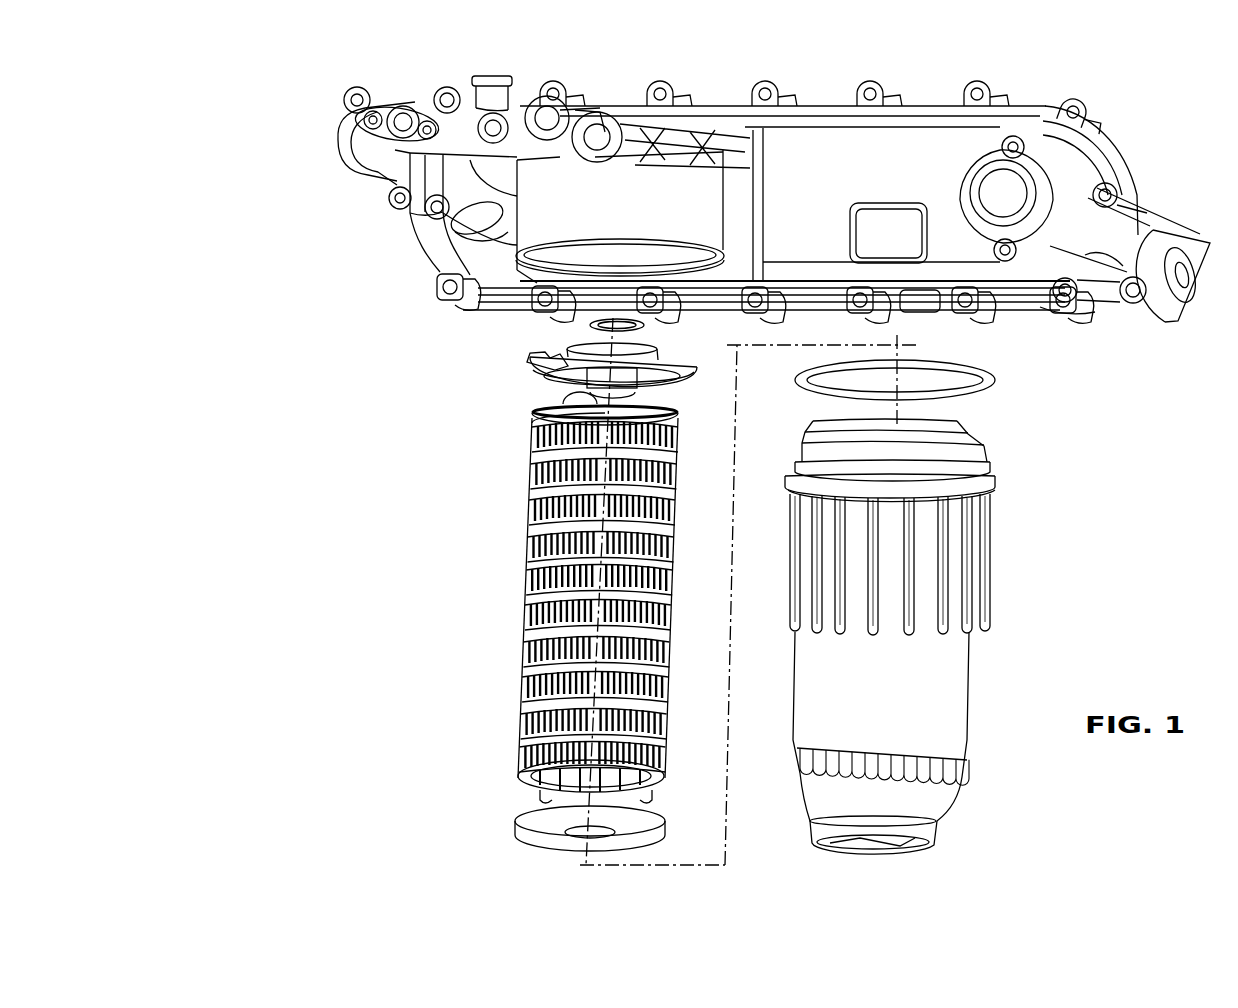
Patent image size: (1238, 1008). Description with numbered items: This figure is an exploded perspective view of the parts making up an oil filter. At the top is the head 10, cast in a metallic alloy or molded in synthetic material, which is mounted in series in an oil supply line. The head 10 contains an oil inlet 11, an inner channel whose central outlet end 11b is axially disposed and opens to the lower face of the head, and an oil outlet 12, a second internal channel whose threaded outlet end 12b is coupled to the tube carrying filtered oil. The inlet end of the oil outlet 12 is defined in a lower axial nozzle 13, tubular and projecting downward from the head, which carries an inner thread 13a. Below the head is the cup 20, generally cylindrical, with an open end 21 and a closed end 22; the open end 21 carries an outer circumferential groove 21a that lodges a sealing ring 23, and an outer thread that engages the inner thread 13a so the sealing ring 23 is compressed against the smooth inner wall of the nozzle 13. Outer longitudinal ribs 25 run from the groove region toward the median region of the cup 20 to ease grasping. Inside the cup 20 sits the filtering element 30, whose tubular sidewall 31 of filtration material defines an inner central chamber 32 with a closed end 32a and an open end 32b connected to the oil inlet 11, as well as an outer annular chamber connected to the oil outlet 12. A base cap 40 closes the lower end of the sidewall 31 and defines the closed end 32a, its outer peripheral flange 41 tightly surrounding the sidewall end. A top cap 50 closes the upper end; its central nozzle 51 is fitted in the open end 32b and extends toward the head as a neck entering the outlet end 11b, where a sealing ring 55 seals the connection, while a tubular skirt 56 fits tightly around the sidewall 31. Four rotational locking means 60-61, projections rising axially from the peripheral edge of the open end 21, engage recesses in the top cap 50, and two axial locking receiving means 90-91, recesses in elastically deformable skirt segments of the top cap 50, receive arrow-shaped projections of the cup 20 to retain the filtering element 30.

The head 10 is at (1036, 80).
The oil inlet 11 is at (489, 192).
The central outlet end 11b is at (392, 183).
The oil outlet 12 is at (461, 126).
The outlet end 12b is at (334, 129).
The lower axial nozzle 13 is at (672, 202).
The inner thread 13a is at (645, 260).
The cup 20 is at (987, 673).
The open end 21 is at (998, 457).
The outer circumferential groove 21a is at (962, 587).
The closed end 22 is at (793, 798).
The sealing ring 23 is at (998, 373).
The outer longitudinal ribs 25 is at (997, 610).
The filtering element 30 is at (514, 547).
The tubular sidewall 31 is at (536, 647).
The inner central chamber 32 is at (552, 780).
The closed end 32a is at (656, 800).
The open end 32b is at (545, 420).
The base cap 40 is at (512, 845).
The outer peripheral flange 41 is at (510, 822).
The top cap 50 is at (528, 373).
The central nozzle 51 is at (637, 386).
The sealing ring 55 is at (606, 318).
The tubular skirt 56 is at (575, 393).
The rotational locking means and projection 60-61 is at (958, 420).
The axial locking receiving means and axial recess 90-91 is at (543, 352).